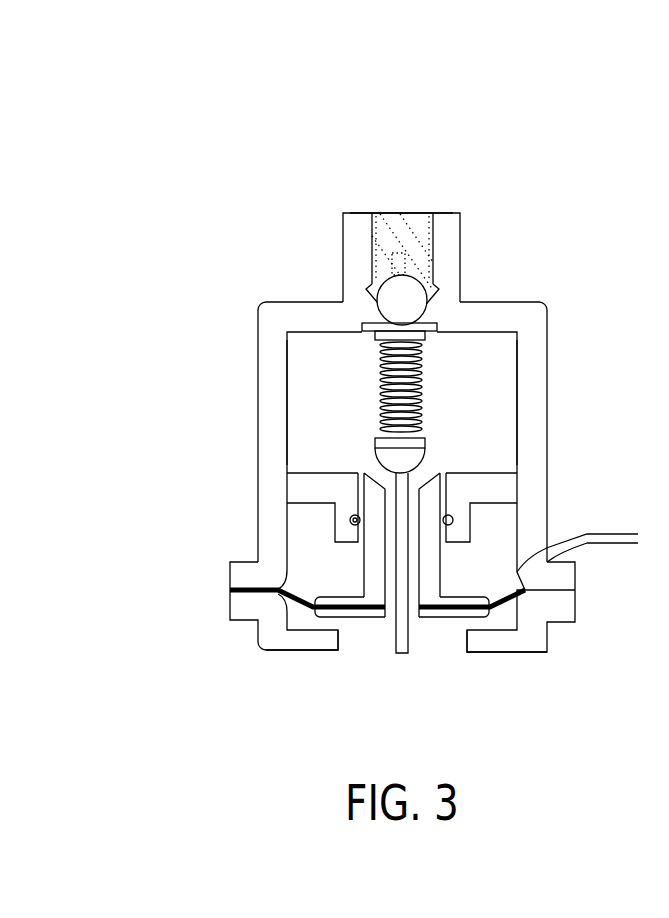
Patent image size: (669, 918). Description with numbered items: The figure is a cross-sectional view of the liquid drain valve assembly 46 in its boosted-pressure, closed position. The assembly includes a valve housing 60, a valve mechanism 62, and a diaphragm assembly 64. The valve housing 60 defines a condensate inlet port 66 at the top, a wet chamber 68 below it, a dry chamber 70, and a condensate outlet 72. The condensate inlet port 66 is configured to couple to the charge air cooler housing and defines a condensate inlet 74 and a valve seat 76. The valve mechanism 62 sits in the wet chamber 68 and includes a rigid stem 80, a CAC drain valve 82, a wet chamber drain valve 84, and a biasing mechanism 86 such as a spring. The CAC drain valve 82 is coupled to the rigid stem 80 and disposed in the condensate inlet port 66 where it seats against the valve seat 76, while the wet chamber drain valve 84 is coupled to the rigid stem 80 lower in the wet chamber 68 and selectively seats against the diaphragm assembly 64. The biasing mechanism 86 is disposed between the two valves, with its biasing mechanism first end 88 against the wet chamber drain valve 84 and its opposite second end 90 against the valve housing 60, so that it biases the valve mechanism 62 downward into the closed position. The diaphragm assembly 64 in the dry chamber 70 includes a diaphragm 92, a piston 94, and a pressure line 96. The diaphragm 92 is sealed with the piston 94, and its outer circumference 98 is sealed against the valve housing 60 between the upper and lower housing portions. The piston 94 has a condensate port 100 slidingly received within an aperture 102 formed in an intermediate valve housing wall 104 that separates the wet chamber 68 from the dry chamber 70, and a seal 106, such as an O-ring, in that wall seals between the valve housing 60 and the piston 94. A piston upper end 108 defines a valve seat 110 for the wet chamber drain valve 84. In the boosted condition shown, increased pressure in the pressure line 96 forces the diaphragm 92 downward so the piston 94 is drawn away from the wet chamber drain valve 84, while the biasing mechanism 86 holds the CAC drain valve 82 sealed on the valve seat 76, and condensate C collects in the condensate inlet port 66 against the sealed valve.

The liquid drain valve assembly 46 is at (576, 195).
The valve housing 60 is at (258, 378).
The valve mechanism 62 is at (459, 397).
The diaphragm assembly 64 is at (297, 545).
The condensate inlet port 66 is at (453, 256).
The wet chamber 68 is at (305, 337).
The dry chamber 70 is at (503, 548).
The condensate outlet 72 is at (350, 652).
The condensate inlet 74 is at (388, 213).
The valve seat 76 is at (432, 307).
The rigid stem 80 is at (403, 655).
The CAC drain valve 82 is at (390, 297).
The wet chamber drain valve 84 is at (400, 452).
The biasing mechanism 86 is at (380, 390).
The biasing mechanism first end 88 is at (463, 437).
The second end 90 is at (456, 342).
The diaphragm 92 is at (507, 617).
The piston 94 is at (420, 603).
The pressure line 96 is at (605, 543).
The outer circumference 98 is at (560, 595).
The condensate port 100 is at (422, 597).
The aperture 102 is at (447, 480).
The intermediate valve housing wall 104 is at (297, 493).
The seal 106 is at (449, 520).
The piston upper end 108 is at (357, 480).
The valve seat 110 is at (355, 520).
The condensate C is at (432, 225).